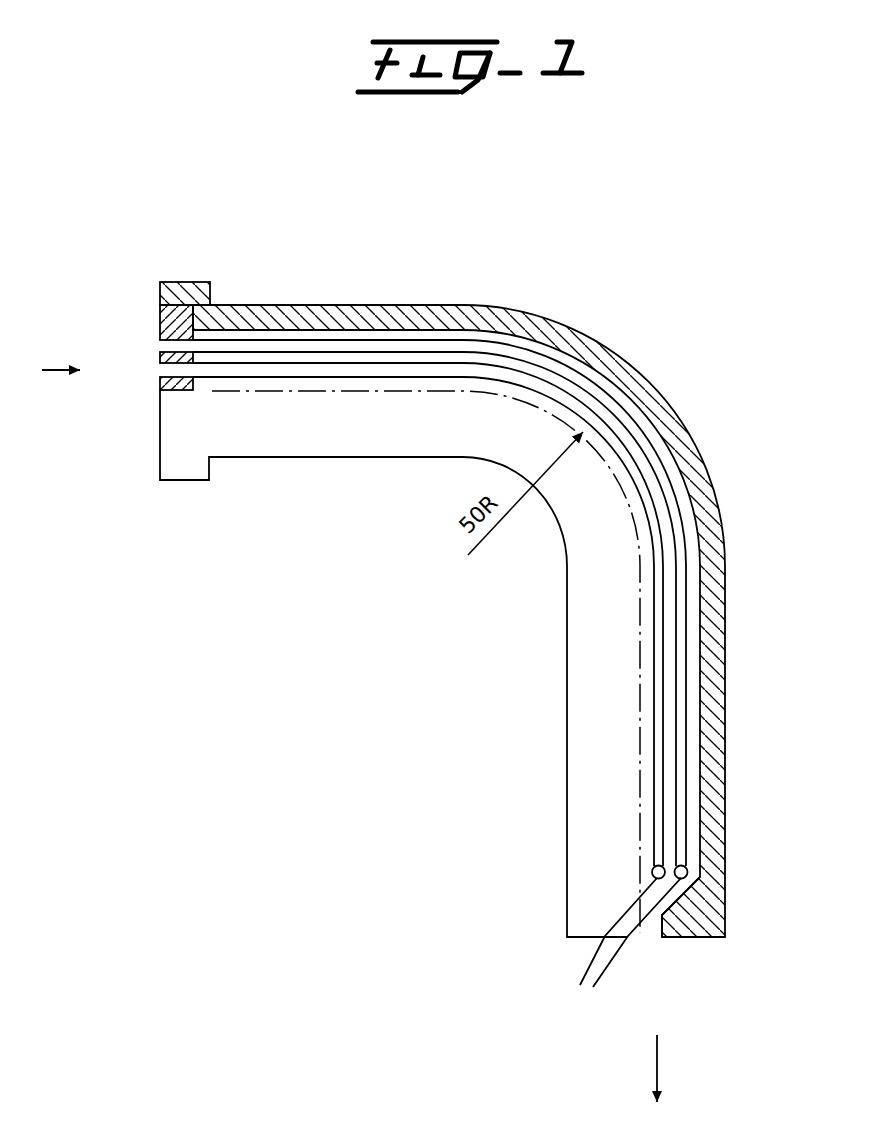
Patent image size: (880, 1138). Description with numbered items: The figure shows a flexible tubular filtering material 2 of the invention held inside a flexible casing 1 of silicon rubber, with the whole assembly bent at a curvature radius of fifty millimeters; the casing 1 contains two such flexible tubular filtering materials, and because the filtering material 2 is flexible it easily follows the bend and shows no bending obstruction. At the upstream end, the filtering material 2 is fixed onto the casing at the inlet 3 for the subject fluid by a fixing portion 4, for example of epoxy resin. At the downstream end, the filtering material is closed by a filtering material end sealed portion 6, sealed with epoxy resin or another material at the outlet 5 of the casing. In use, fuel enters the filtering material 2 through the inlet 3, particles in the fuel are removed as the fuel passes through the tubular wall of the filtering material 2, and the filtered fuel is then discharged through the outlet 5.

The flexible casing 1 is at (428, 305).
The flexible tubular filtering material 2 is at (592, 387).
The inlet 3 is at (158, 367).
The portion at which the filtering material is fixed onto the casing 4 is at (158, 389).
The outlet 5 is at (683, 938).
The filtering material end sealed portion 6 is at (622, 959).